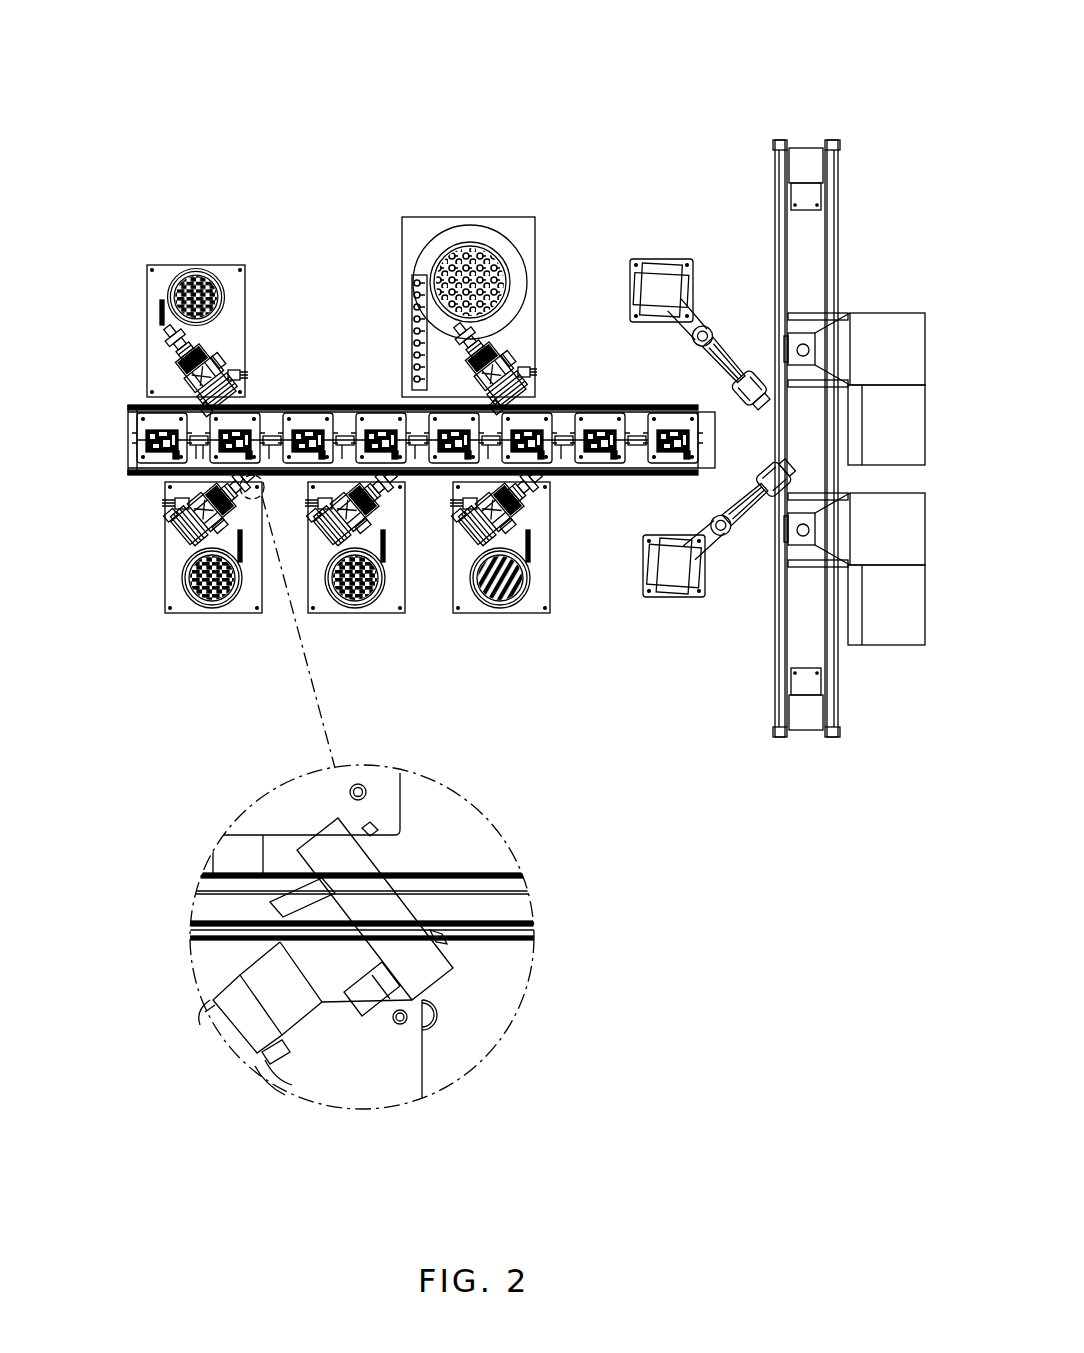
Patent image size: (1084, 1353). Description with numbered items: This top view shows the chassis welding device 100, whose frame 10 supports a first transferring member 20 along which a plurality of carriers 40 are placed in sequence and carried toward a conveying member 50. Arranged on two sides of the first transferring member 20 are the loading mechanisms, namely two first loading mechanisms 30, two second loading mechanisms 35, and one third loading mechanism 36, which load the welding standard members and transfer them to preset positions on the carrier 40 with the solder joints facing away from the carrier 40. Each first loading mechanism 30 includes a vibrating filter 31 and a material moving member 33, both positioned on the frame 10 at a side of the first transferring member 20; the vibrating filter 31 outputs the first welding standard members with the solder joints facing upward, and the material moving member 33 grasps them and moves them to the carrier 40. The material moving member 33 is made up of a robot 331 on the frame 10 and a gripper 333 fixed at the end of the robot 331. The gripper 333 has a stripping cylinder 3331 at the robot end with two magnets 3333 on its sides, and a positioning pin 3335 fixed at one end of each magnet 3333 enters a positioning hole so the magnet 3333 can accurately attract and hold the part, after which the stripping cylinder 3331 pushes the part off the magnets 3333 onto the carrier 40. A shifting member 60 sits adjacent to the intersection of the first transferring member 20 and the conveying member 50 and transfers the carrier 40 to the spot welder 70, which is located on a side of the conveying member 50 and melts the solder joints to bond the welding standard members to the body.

The chassis welding device 100 is at (356, 82).
The frame 10 is at (540, 603).
The first transferring member 20 is at (157, 472).
The first loading mechanism 30 is at (175, 664).
The vibrating filter 31 is at (190, 590).
The material moving member 33 is at (185, 517).
The second loading mechanism 35 is at (493, 600).
The third loading mechanism 36 is at (428, 258).
The carrier 40 is at (165, 448).
The conveying member 50 is at (785, 643).
The shifting member 60 is at (673, 590).
The spot welder 70 is at (838, 343).
The robot 331 is at (240, 1020).
The gripper 333 is at (738, 935).
The stripping cylinder 3331 is at (387, 927).
The magnet 3333 is at (387, 987).
The positioning pin 3335 is at (437, 939).